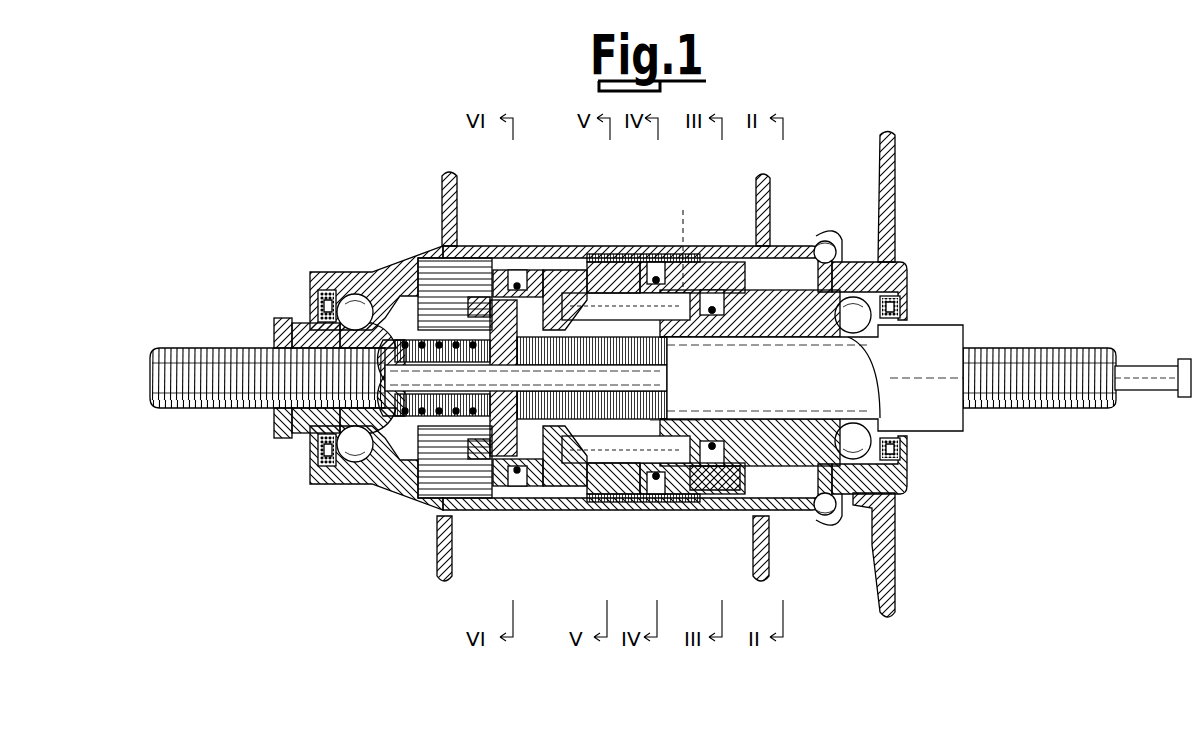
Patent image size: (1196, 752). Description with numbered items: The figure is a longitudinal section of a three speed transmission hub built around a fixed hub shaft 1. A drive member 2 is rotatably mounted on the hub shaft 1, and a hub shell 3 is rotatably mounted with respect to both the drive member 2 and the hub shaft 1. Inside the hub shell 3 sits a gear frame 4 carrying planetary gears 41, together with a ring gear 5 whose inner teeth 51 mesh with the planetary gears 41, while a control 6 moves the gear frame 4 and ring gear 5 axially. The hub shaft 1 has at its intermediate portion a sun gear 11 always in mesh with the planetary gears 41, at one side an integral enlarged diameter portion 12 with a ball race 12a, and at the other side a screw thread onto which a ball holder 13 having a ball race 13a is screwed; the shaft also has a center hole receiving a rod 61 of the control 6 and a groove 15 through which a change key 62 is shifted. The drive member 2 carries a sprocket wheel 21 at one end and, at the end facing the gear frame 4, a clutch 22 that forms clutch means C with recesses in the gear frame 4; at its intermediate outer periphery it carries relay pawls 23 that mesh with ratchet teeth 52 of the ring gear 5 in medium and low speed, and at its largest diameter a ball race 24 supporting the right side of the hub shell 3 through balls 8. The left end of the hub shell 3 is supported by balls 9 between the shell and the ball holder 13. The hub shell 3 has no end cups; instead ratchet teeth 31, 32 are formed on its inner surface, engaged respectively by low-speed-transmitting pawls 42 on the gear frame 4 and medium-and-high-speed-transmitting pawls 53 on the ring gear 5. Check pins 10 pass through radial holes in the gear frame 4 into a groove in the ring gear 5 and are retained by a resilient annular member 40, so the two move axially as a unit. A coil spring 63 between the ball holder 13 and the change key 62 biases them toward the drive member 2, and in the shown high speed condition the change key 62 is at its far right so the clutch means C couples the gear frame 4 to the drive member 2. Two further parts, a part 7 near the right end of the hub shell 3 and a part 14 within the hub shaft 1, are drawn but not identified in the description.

The hub shaft 1 is at (1034, 352).
The drive member 2 is at (900, 270).
The hub shell 3 is at (536, 243).
The gear frame 4 is at (556, 270).
The ring gear 5 is at (697, 262).
The control 6 is at (478, 428).
The seal 7 is at (902, 305).
The balls 8 is at (823, 242).
The balls 9 is at (353, 296).
The check pins 10 is at (651, 288).
The sun gear 11 is at (556, 422).
The enlarged diameter portion 12 is at (965, 420).
The ball race 12a is at (882, 410).
The ball holder 13 is at (295, 438).
The ball race 13a is at (350, 450).
The push rod 14 is at (392, 402).
The groove 15 is at (420, 430).
The sprocket wheel 21 is at (893, 204).
The clutch 22 is at (684, 240).
The relay pawls 23 is at (710, 460).
The ball race 24 is at (836, 232).
The ratchet teeth 31 is at (437, 262).
The ratchet teeth 32 is at (778, 252).
The annular member 40 is at (649, 422).
The planetary gears 41 is at (594, 268).
The low-speed-transmitting pawls 42 is at (511, 273).
The inner teeth 51 is at (626, 280).
The ratchet teeth 52 is at (742, 290).
The medium-and-high-speed-transmitting pawls 53 is at (797, 480).
The rod 61 is at (1142, 392).
The change key 62 is at (512, 490).
The coil spring 63 is at (392, 480).
The clutch means C is at (655, 425).